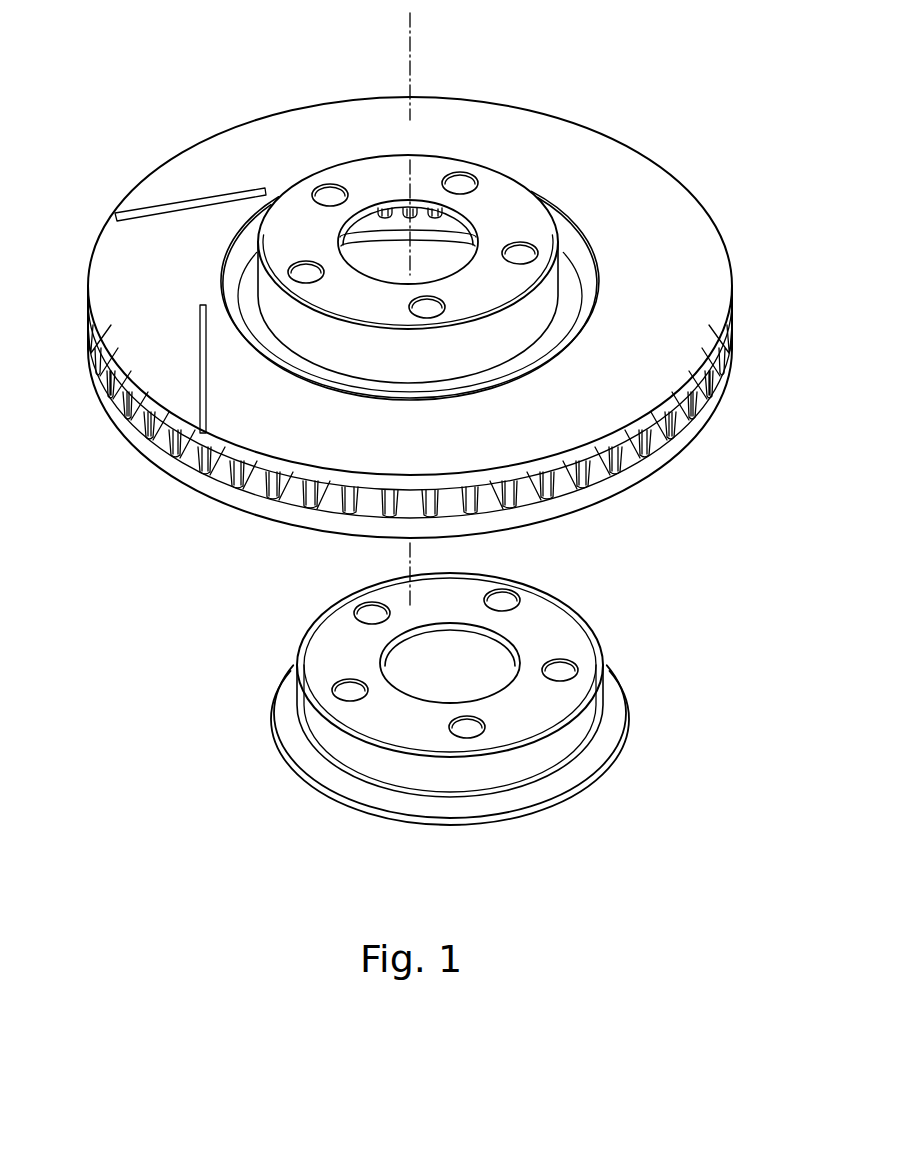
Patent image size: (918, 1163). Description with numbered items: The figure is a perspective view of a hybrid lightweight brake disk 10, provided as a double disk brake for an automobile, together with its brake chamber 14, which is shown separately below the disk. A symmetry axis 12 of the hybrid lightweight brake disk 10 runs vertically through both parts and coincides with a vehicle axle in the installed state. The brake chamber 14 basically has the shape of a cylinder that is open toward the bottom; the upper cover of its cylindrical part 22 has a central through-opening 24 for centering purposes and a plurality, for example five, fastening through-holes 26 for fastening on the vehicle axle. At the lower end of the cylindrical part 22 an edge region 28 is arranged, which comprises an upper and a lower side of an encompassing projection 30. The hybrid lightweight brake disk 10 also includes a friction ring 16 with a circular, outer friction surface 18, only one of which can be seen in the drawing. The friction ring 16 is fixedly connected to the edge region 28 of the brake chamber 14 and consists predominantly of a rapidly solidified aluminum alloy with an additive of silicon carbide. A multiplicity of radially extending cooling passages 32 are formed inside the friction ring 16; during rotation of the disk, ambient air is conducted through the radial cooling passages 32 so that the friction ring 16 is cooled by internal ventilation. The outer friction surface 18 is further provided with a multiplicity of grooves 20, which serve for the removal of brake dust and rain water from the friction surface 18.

The hybrid lightweight brake disk 10 is at (412, 325).
The symmetry axis 12 is at (411, 58).
The brake chamber 14 is at (493, 180).
The friction ring 16 is at (122, 387).
The friction surface 18 is at (653, 287).
The grooves 20 is at (190, 205).
The cylindrical part 22 is at (461, 725).
The central through-opening 24 is at (450, 667).
The fastening through-holes 26 is at (348, 692).
The edge region 28 is at (457, 830).
The encompassing projection 30 is at (625, 705).
The radial cooling passages 32 is at (677, 437).